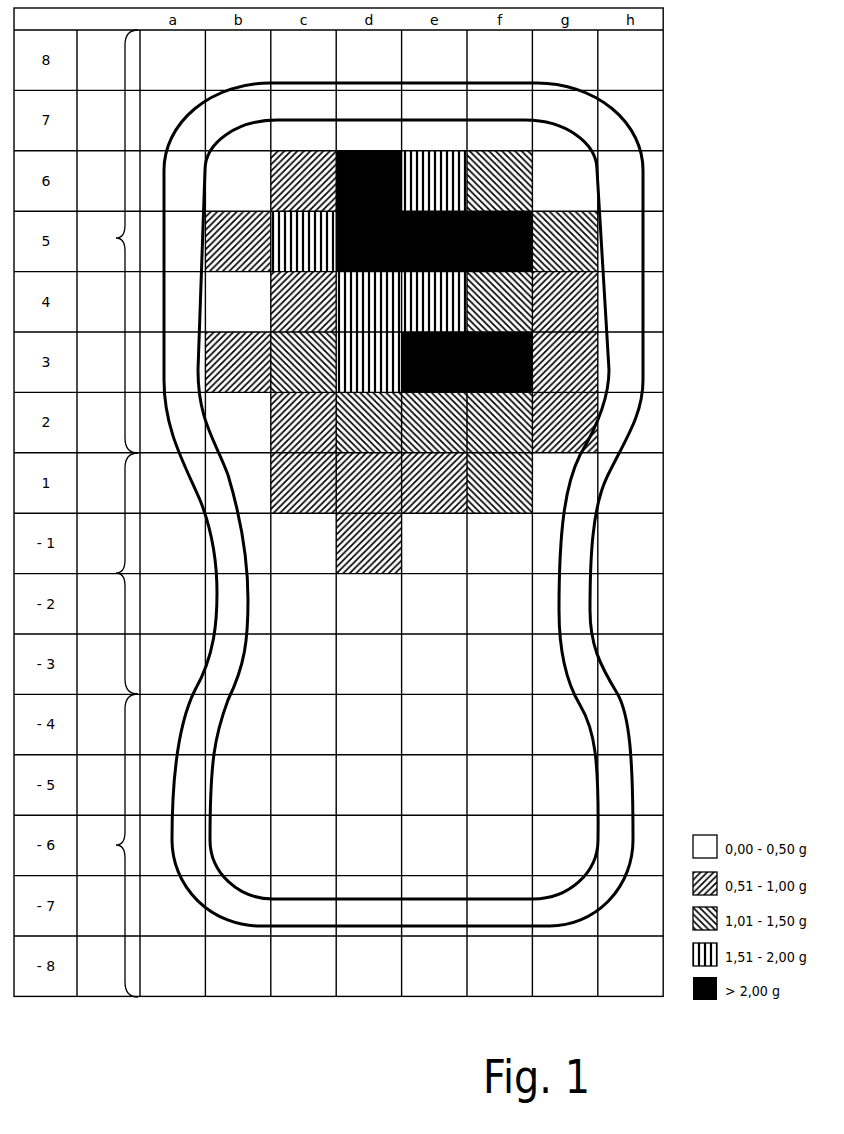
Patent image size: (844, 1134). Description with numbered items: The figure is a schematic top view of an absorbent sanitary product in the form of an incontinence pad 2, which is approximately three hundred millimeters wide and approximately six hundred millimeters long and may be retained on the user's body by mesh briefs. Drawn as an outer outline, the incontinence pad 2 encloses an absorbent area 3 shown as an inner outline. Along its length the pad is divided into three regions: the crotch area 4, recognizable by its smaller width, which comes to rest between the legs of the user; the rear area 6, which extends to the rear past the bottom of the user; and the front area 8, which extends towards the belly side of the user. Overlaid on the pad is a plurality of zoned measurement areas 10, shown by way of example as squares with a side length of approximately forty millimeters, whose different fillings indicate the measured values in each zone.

The incontinence pad 2 is at (640, 257).
The absorbent area 3 is at (560, 559).
The zoned measurement areas 10 is at (510, 190).
The rear area 6 is at (116, 241).
The crotch area 4 is at (116, 573).
The front area 8 is at (116, 845).